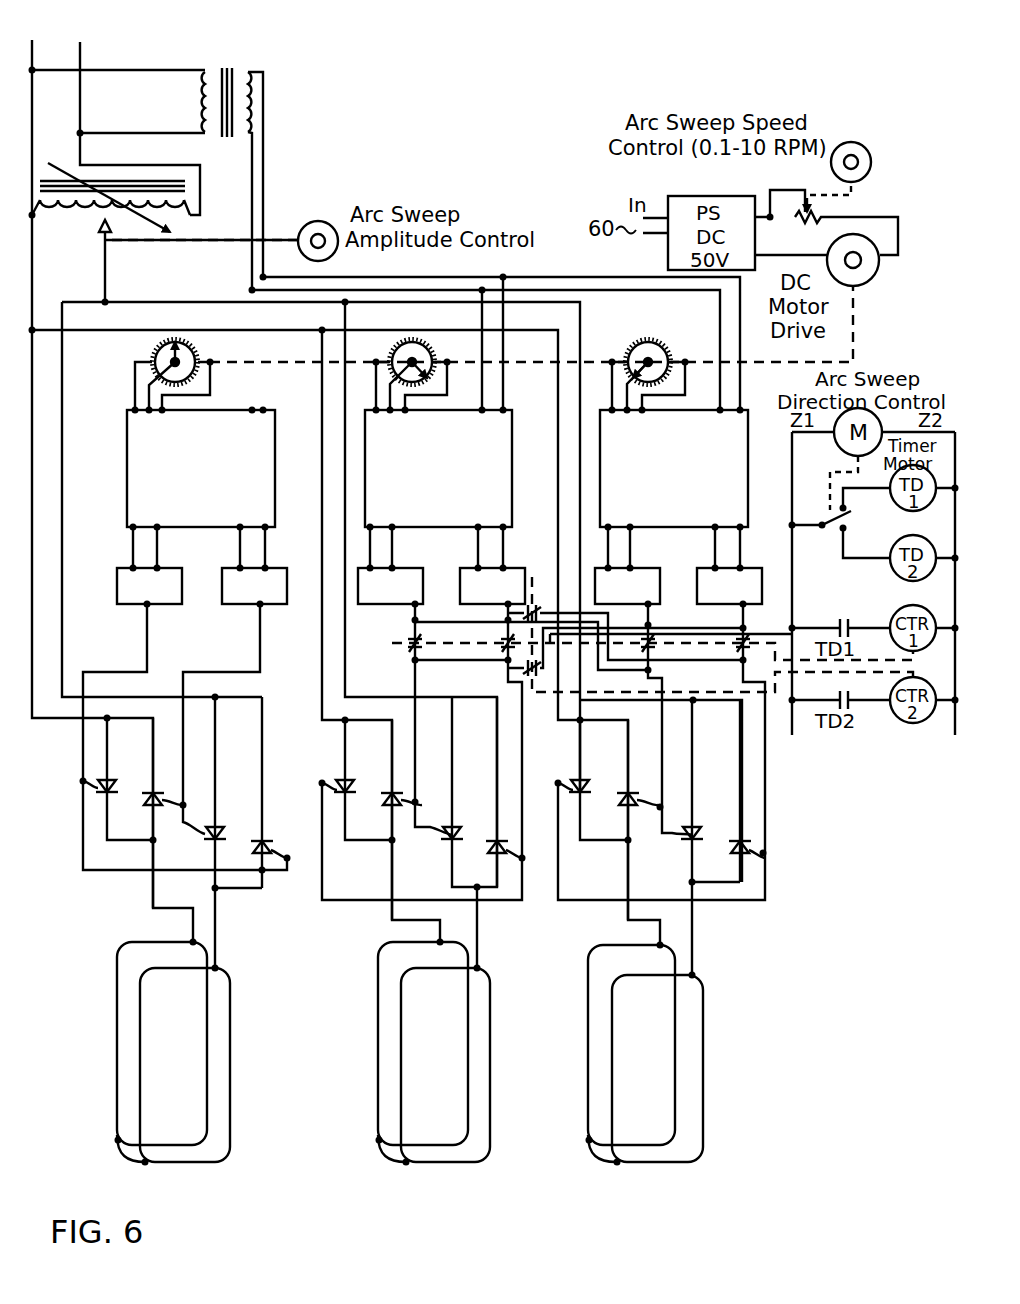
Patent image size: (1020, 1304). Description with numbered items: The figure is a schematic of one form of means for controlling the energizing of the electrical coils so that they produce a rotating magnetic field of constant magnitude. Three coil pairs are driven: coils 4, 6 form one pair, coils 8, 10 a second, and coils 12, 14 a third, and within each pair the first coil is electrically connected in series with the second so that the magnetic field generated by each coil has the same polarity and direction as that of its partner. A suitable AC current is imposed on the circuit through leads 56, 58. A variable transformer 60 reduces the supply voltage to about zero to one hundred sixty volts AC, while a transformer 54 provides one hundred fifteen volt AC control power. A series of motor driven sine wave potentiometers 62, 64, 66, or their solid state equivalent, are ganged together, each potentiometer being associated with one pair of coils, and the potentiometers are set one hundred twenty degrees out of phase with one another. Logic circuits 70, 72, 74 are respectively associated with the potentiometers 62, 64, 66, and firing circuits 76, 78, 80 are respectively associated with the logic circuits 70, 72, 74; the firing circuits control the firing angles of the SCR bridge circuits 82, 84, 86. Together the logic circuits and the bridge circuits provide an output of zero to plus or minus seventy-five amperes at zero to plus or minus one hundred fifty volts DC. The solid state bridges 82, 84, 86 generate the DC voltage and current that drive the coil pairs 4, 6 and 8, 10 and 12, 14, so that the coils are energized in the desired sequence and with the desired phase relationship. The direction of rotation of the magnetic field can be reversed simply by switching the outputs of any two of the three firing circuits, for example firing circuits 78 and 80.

The coil 4 is at (117, 1055).
The coil 6 is at (140, 1067).
The coil 8 is at (378, 1055).
The coil 10 is at (401, 1070).
The coil 12 is at (588, 1057).
The coil 14 is at (612, 1072).
The transformer 54 is at (230, 72).
The lead 56 is at (33, 48).
The lead 58 is at (91, 54).
The variable transformer 60 is at (203, 185).
The sine wave potentiometer 62 is at (150, 357).
The sine wave potentiometer 64 is at (434, 355).
The sine wave potentiometer 66 is at (668, 352).
The logic circuit 70 is at (214, 481).
The logic circuit 72 is at (458, 481).
The logic circuit 74 is at (691, 481).
The firing circuit 76 is at (237, 564).
The firing circuit 78 is at (475, 564).
The firing circuit 80 is at (712, 564).
The SCR bridge circuit 82 is at (78, 824).
The SCR bridge circuit 84 is at (316, 806).
The SCR bridge circuit 86 is at (771, 836).